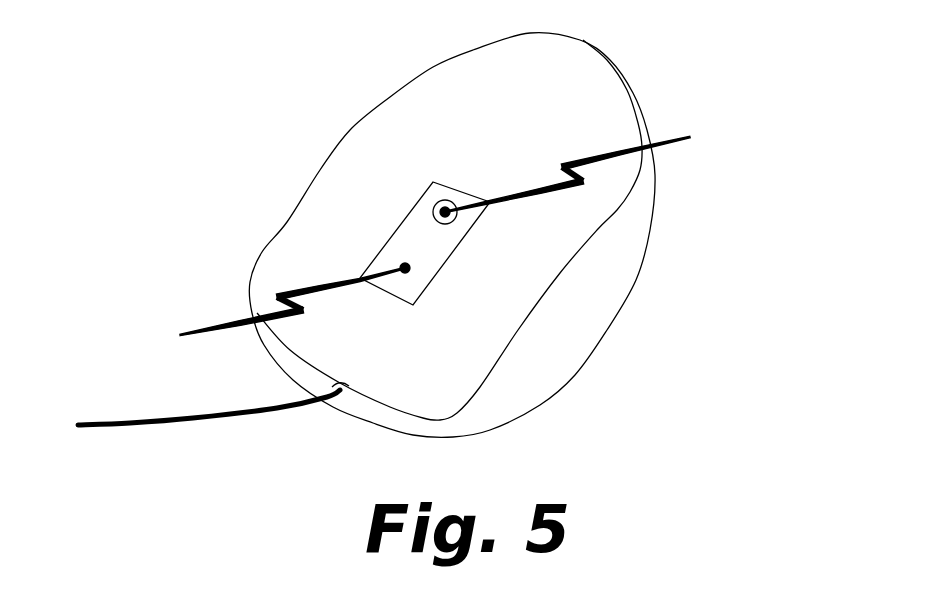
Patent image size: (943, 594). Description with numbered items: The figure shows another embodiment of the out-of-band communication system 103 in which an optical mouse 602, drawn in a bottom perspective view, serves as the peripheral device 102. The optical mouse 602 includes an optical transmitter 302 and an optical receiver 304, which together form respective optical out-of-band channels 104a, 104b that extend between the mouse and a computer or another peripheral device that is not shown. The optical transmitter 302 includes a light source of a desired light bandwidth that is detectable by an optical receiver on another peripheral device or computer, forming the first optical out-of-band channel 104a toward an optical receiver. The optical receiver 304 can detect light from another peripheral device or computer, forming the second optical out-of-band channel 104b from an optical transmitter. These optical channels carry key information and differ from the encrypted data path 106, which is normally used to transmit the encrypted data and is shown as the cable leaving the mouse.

The optical mouse 602 is at (523, 235).
The peripheral device 102 is at (630, 70).
The out-of-band communication system 103 is at (633, 384).
The optical transmitter 302 is at (405, 268).
The optical receiver 304 is at (453, 205).
The optical out-of-band channel 104a is at (301, 286).
The optical out-of-band channel 104b is at (608, 192).
The encrypted data path 106 is at (197, 423).